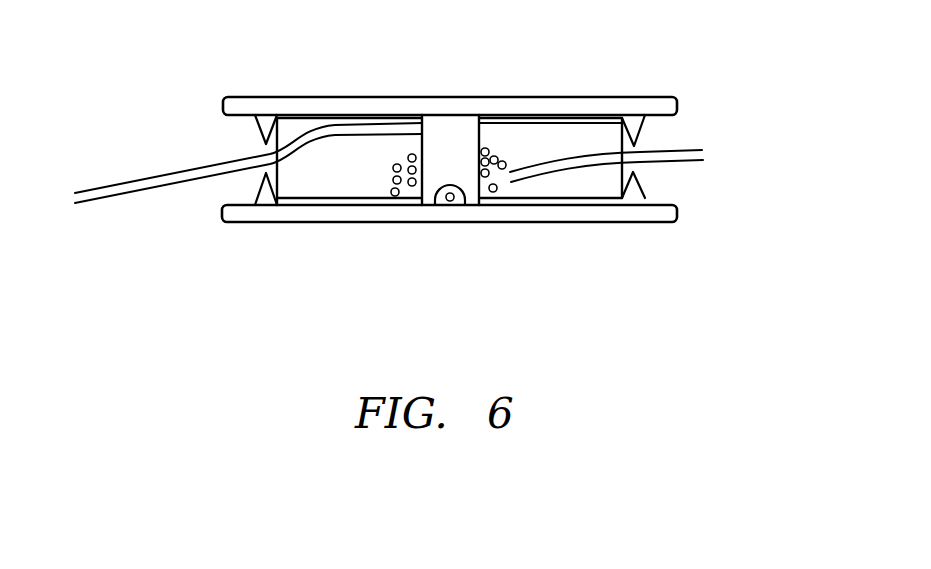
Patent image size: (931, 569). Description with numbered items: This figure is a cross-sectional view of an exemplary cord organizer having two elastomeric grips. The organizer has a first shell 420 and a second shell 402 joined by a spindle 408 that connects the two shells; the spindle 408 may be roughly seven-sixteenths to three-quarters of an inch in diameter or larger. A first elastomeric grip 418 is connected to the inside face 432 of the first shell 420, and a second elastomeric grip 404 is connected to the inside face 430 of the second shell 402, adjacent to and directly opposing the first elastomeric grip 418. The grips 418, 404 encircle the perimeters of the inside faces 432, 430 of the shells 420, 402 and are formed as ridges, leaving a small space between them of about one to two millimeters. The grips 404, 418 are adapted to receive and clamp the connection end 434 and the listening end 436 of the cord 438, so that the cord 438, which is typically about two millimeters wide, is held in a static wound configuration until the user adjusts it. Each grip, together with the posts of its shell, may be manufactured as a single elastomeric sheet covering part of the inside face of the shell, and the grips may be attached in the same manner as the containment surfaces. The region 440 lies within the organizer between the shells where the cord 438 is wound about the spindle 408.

The second shell 402 is at (512, 97).
The second elastomeric grip 404 is at (643, 137).
The spindle 408 is at (446, 129).
The first elastomeric grip 418 is at (643, 197).
The first shell 420 is at (303, 223).
The inside face of the second shell 430 is at (237, 117).
The inside face of the first shell 432 is at (225, 206).
The connection end 434 is at (93, 204).
The listening end 436 is at (703, 153).
The cord 438 is at (409, 155).
The cavity 440 is at (367, 186).